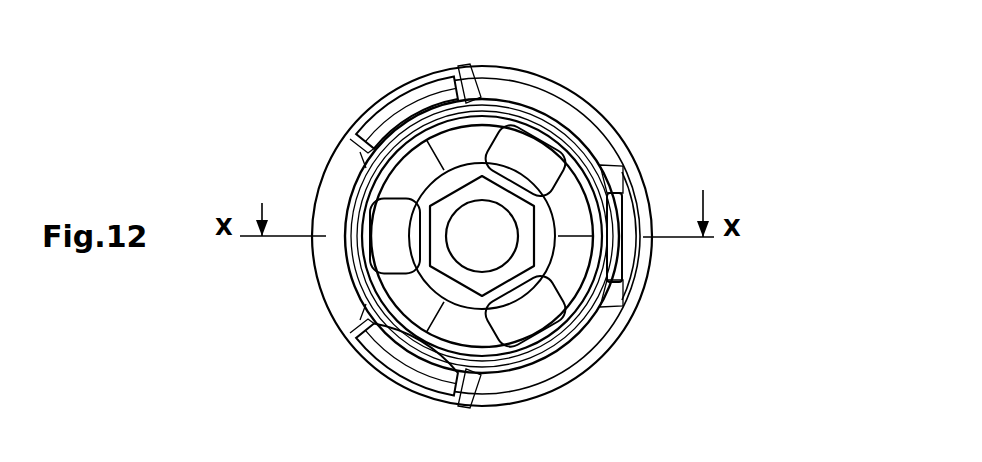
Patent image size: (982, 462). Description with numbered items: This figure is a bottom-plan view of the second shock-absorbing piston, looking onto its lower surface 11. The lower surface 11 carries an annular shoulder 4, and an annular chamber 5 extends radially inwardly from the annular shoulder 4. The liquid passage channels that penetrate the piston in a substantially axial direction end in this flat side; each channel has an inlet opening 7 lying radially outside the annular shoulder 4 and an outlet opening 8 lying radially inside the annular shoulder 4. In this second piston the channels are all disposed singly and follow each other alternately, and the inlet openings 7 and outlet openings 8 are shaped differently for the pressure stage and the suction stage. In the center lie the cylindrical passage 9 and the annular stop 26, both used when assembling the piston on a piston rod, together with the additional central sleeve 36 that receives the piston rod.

The annular shoulder 4 is at (380, 187).
The annular chamber 5 is at (407, 173).
The inlet opening 7 is at (410, 118).
The outlet opening 8 is at (383, 243).
The cylindrical passage 9 is at (470, 250).
The lower surface 11 is at (732, 158).
The annular stop 26 is at (573, 270).
The central sleeve 36 is at (483, 192).